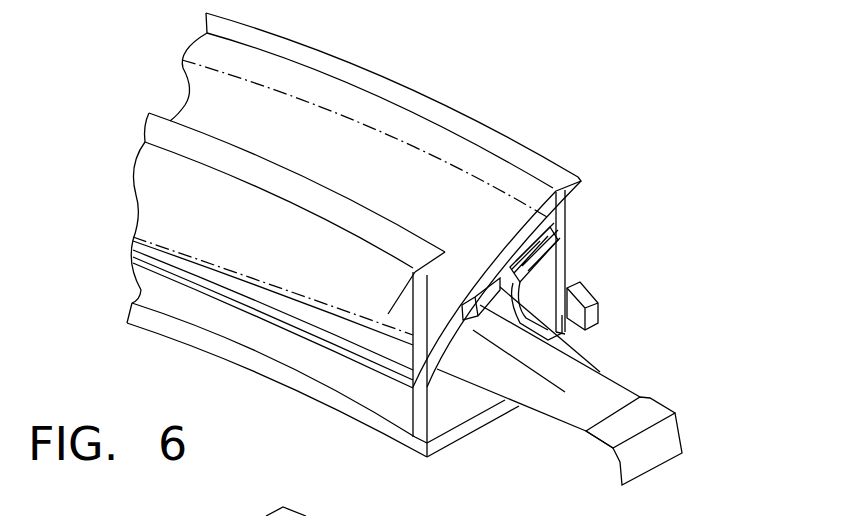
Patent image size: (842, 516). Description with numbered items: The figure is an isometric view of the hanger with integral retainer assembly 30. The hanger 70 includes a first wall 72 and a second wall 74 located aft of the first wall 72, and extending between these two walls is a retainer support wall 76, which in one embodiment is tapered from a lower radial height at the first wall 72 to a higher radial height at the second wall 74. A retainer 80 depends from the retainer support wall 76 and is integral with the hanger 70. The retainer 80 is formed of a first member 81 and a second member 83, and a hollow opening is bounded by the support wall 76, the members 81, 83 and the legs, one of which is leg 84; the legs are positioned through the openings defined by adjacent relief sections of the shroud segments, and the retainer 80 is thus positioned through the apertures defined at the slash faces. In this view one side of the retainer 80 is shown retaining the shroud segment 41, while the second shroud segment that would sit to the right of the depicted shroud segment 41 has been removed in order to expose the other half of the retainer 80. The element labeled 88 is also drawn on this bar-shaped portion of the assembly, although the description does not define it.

The hanger with integral retainer assembly 30 is at (519, 107).
The hanger 70 is at (160, 93).
The first wall 72 is at (405, 337).
The second wall 74 is at (567, 225).
The retainer support wall 76 is at (436, 221).
The retainer 80 is at (547, 278).
The first member 81 is at (490, 337).
The second member 83 is at (597, 313).
The leg 84 is at (583, 442).
The bar 88 is at (642, 418).
The shroud segment 41 is at (462, 437).